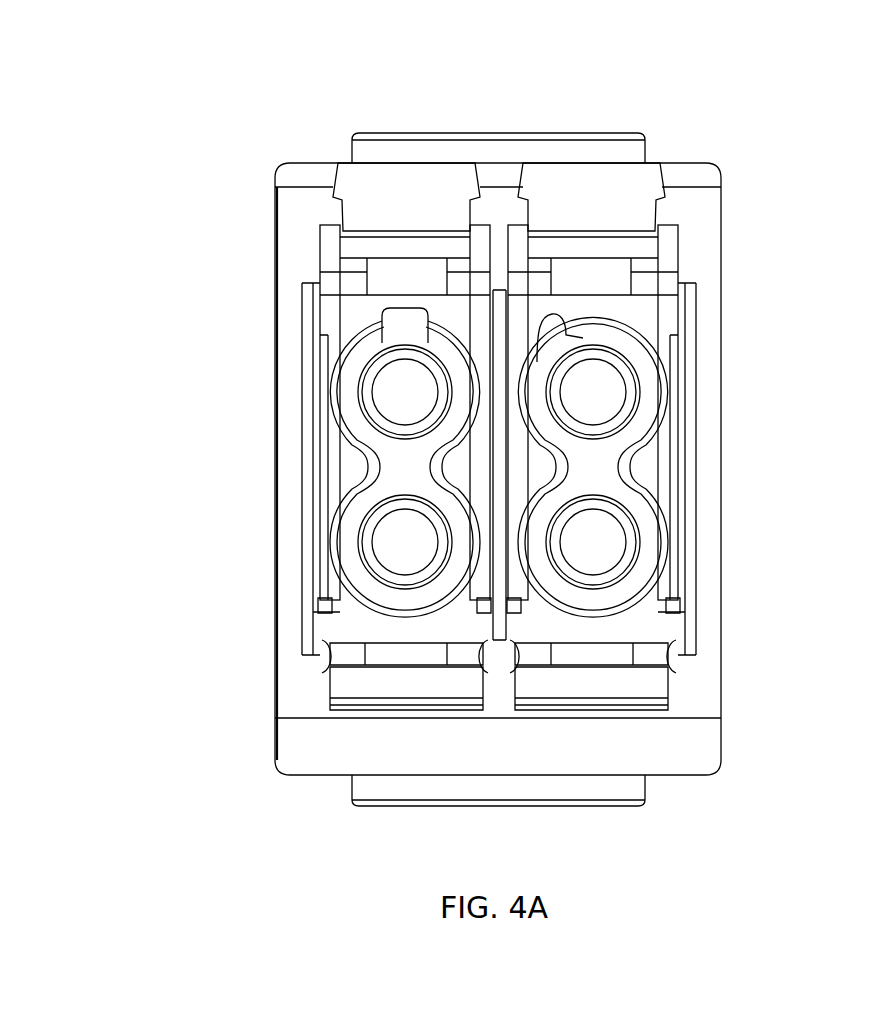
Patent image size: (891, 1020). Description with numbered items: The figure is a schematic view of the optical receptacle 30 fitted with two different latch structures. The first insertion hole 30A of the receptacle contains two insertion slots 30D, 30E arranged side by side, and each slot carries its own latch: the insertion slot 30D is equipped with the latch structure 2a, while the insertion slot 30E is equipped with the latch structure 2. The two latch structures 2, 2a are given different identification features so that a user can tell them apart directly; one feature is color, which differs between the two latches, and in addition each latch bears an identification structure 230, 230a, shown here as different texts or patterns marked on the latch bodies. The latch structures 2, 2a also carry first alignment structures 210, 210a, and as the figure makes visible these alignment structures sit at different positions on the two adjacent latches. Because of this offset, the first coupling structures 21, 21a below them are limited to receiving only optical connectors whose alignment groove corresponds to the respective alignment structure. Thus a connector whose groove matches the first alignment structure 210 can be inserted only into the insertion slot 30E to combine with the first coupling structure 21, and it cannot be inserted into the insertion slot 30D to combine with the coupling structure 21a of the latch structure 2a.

The latch structure 2 is at (643, 170).
The latch structure 2a is at (365, 173).
The first coupling structure 21 is at (587, 467).
The first coupling structure 21a is at (403, 461).
The optical receptacle 30 is at (705, 238).
The first insertion hole 30A is at (317, 543).
The insertion slot 30D is at (385, 630).
The insertion slot 30E is at (603, 638).
The first alignment structure 210 is at (553, 338).
The first alignment structure 210a is at (397, 325).
The identification structure 230 is at (600, 178).
The identification structure 230a is at (445, 178).